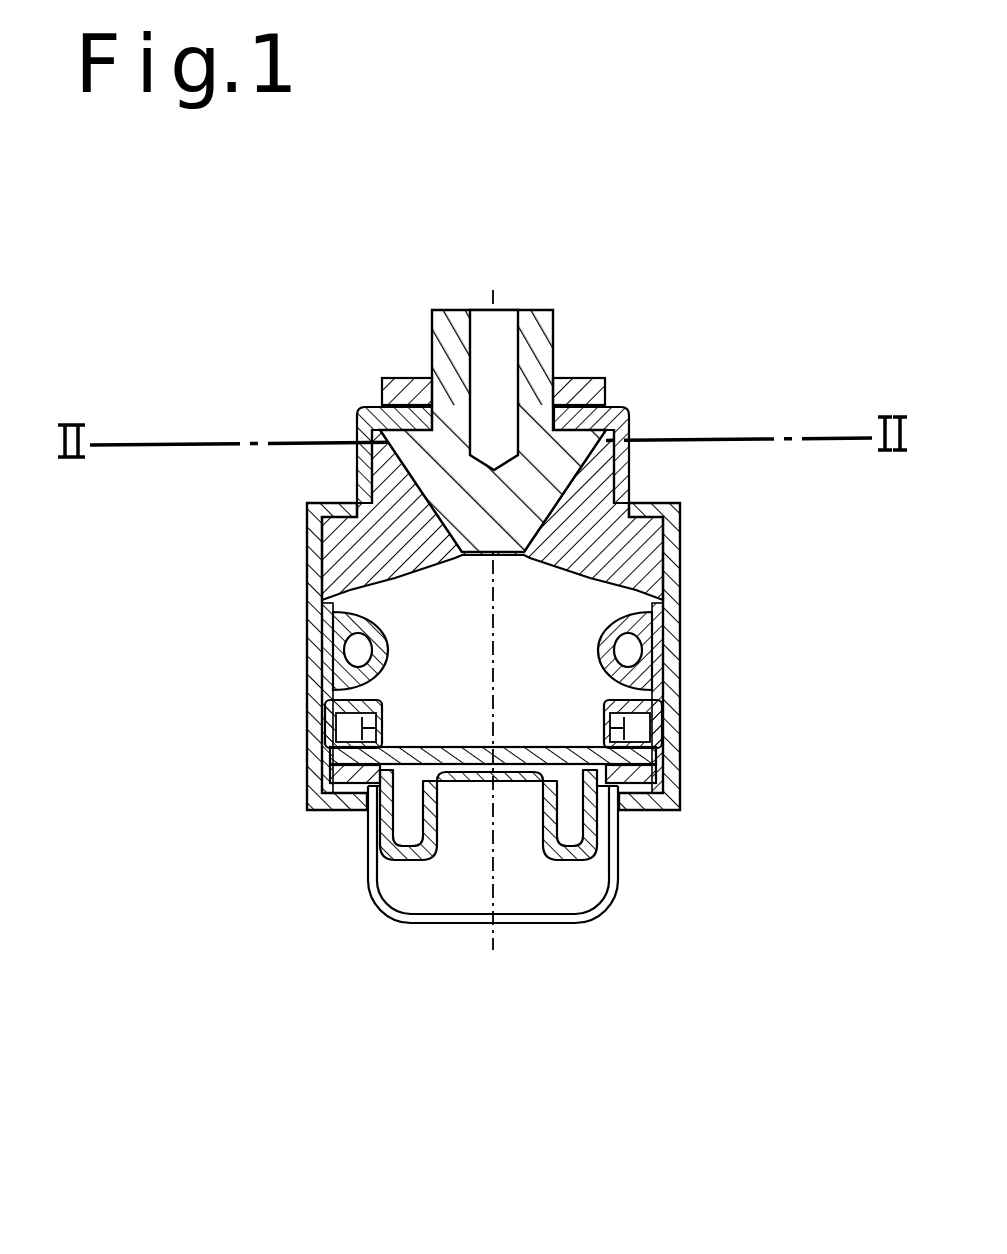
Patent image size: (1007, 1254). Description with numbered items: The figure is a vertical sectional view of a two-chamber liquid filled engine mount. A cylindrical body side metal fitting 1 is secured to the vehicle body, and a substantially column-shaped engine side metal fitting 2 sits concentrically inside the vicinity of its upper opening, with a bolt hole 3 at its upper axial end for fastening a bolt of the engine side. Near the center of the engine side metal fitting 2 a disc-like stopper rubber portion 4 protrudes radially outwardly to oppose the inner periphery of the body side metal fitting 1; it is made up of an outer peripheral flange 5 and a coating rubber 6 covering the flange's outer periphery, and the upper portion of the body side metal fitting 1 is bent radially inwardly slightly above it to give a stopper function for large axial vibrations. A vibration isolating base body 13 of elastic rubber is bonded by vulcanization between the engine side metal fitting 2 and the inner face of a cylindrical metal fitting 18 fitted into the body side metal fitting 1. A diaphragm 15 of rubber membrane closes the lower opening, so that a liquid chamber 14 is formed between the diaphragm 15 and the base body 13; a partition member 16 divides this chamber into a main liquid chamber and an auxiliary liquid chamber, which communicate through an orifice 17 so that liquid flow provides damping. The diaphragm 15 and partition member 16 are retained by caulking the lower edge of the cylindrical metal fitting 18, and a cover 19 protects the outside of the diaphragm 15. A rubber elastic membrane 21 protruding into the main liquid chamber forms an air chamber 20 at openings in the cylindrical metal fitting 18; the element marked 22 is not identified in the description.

The body side metal fitting 1 is at (682, 565).
The engine side metal fitting 2 is at (548, 343).
The bolt hole 3 is at (502, 332).
The stopper rubber portion 4 is at (372, 448).
The outer peripheral flange 5 is at (365, 435).
The coating rubber 6 is at (628, 440).
The vibration isolating base body 13 is at (637, 503).
The liquid chamber 14 is at (530, 697).
The diaphragm 15 is at (585, 827).
The partition member 16 is at (473, 753).
The orifice 17 is at (646, 724).
The cylindrical metal fitting 18 is at (330, 735).
The cover 19 is at (386, 896).
The air chamber 20 is at (350, 645).
The rubber elastic membrane 21 is at (345, 667).
The right stopper ring 22 is at (663, 647).